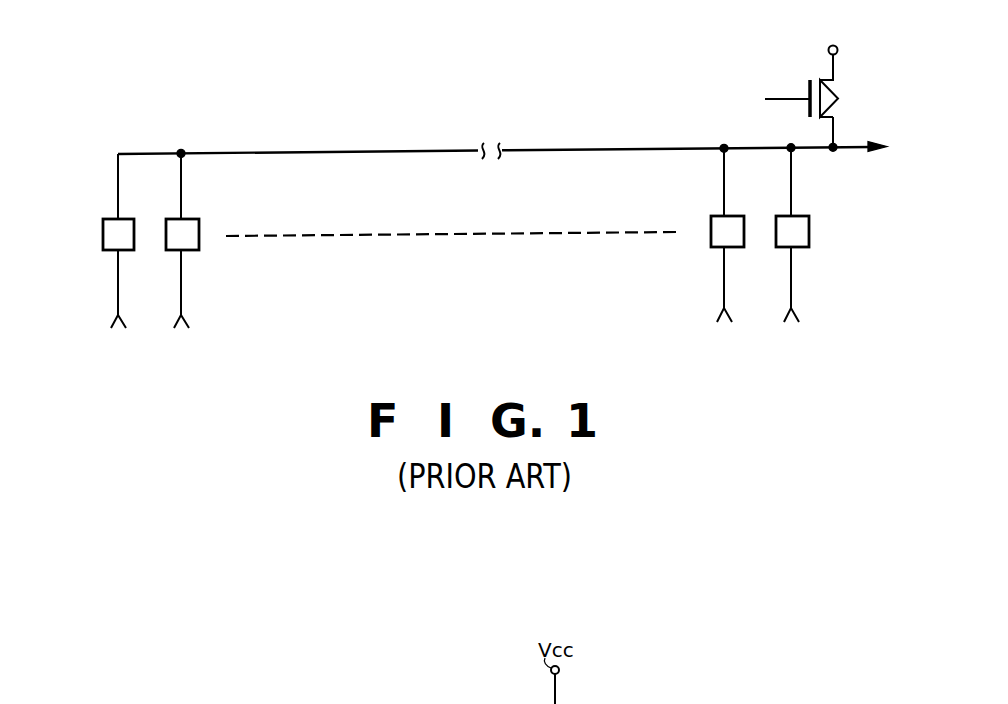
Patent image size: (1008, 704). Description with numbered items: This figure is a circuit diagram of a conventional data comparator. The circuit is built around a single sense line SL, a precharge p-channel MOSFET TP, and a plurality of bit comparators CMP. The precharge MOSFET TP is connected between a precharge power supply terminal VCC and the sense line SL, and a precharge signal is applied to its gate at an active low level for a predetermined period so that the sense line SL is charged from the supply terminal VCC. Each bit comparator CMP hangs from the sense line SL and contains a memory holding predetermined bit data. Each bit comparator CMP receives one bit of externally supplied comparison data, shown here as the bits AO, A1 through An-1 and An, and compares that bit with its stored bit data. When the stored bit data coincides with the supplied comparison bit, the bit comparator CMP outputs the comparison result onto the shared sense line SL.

The sense line SL is at (603, 148).
The bit comparator CMP is at (110, 227).
The comparison data bit An is at (124, 256).
The comparison data bit An-1 is at (188, 255).
The comparison data bit A1 is at (732, 250).
The comparison data bit A0 AO is at (797, 250).
The precharge p-channel MOSFET TP is at (842, 98).
The precharge power supply terminal VCC is at (836, 34).